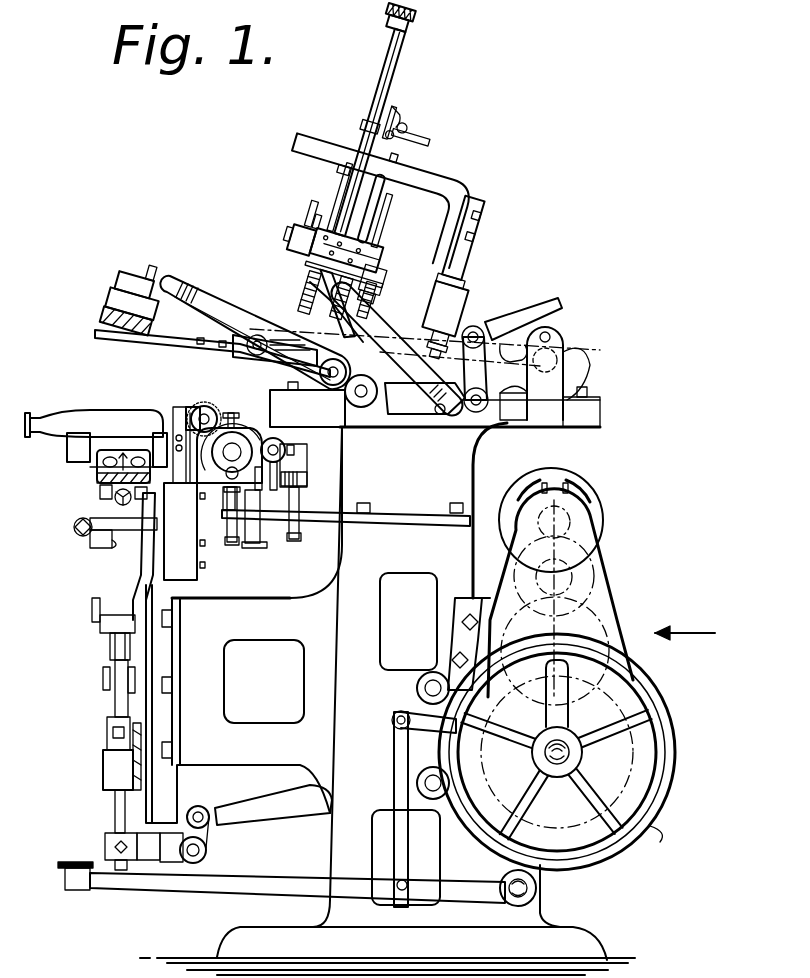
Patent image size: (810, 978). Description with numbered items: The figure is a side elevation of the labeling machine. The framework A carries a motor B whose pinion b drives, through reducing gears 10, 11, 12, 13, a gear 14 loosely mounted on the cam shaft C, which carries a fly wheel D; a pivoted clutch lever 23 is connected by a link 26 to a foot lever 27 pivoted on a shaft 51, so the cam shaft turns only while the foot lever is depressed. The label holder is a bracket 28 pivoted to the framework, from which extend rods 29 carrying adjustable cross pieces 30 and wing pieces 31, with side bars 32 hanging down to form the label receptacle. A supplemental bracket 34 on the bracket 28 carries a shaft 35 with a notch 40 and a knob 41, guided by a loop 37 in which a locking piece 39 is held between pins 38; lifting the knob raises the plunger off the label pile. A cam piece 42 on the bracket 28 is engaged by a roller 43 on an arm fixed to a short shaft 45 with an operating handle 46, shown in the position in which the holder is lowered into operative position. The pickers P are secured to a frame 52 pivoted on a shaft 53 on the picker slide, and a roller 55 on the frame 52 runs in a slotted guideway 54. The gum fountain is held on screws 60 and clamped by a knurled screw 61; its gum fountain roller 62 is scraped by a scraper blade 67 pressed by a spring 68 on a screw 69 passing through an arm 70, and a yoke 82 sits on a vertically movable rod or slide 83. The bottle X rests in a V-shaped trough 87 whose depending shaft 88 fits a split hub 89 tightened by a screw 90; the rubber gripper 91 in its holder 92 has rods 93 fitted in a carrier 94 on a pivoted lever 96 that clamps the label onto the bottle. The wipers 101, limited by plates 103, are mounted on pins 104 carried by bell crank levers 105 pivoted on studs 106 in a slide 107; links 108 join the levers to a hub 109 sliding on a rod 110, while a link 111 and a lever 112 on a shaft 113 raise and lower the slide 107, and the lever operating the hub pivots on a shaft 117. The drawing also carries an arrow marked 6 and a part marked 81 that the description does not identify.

The handle or knob 41 is at (424, 26).
The shaft 35 is at (386, 136).
The guiding loop 37 is at (402, 112).
The pins 38 is at (409, 141).
The supplemental bracket 34 is at (379, 182).
The locking piece 39 is at (429, 135).
The bracket 28 is at (474, 270).
The notch 40 is at (320, 191).
The side bars 32 is at (331, 247).
The cross pieces 30 is at (348, 229).
The wing pieces 31 is at (363, 259).
The rods 29 is at (284, 225).
The roller 43 is at (482, 322).
The cam piece 42 is at (510, 333).
The operating handle 46 is at (400, 342).
The rods 93 is at (138, 270).
The carrier 94 is at (112, 286).
The holder 92 is at (108, 302).
The gripper 91 is at (106, 322).
The slotted guideway 54 is at (240, 340).
The roller 55 is at (252, 312).
The pivoted lever 96 is at (207, 302).
The pickers P is at (118, 348).
The frame 52 is at (318, 360).
The shaft 53 is at (352, 405).
The short shaft 45 is at (472, 413).
The scraper blade 67 is at (307, 404).
The gum fountain roller 62 is at (245, 424).
The yoke 82 is at (192, 407).
The cam 81 is at (210, 406).
The arm 70 is at (288, 455).
The spring 68 is at (306, 470).
The screw 69 is at (307, 481).
The screw 61 is at (260, 502).
The screws 60 is at (234, 545).
The rod or slide 83 is at (186, 481).
The bottle X is at (68, 421).
The plates 103 is at (114, 452).
The V-shaped trough or holder 87 is at (68, 448).
The wipers 101 is at (97, 478).
The pins 104 is at (100, 494).
The screw 90 is at (74, 527).
The hub 89 is at (95, 533).
The depending shaft 88 is at (100, 552).
The bell crank levers 105 is at (139, 574).
The studs 106 is at (92, 612).
The links 108 is at (116, 702).
The hub 109 is at (106, 770).
The rod 110 is at (118, 814).
The slide 107 is at (158, 862).
The foot lever 27 is at (234, 892).
The link 111 is at (207, 838).
The lever 112 is at (282, 812).
The shaft 117 is at (417, 688).
The shaft 113 is at (394, 762).
The pivoted lever 23 is at (420, 730).
The link 26 is at (417, 783).
The framework A is at (385, 606).
The motor B is at (590, 485).
The pinion b is at (572, 519).
The reducing gear 10 is at (595, 568).
The reducing gear 11 is at (575, 580).
The reducing gear 12 is at (607, 606).
The direction arrow 6 is at (685, 623).
The reducing gear 13 is at (624, 655).
The gear 14 is at (640, 705).
The cam shaft C is at (562, 752).
The fly wheel D is at (642, 820).
The shaft 51 is at (537, 888).